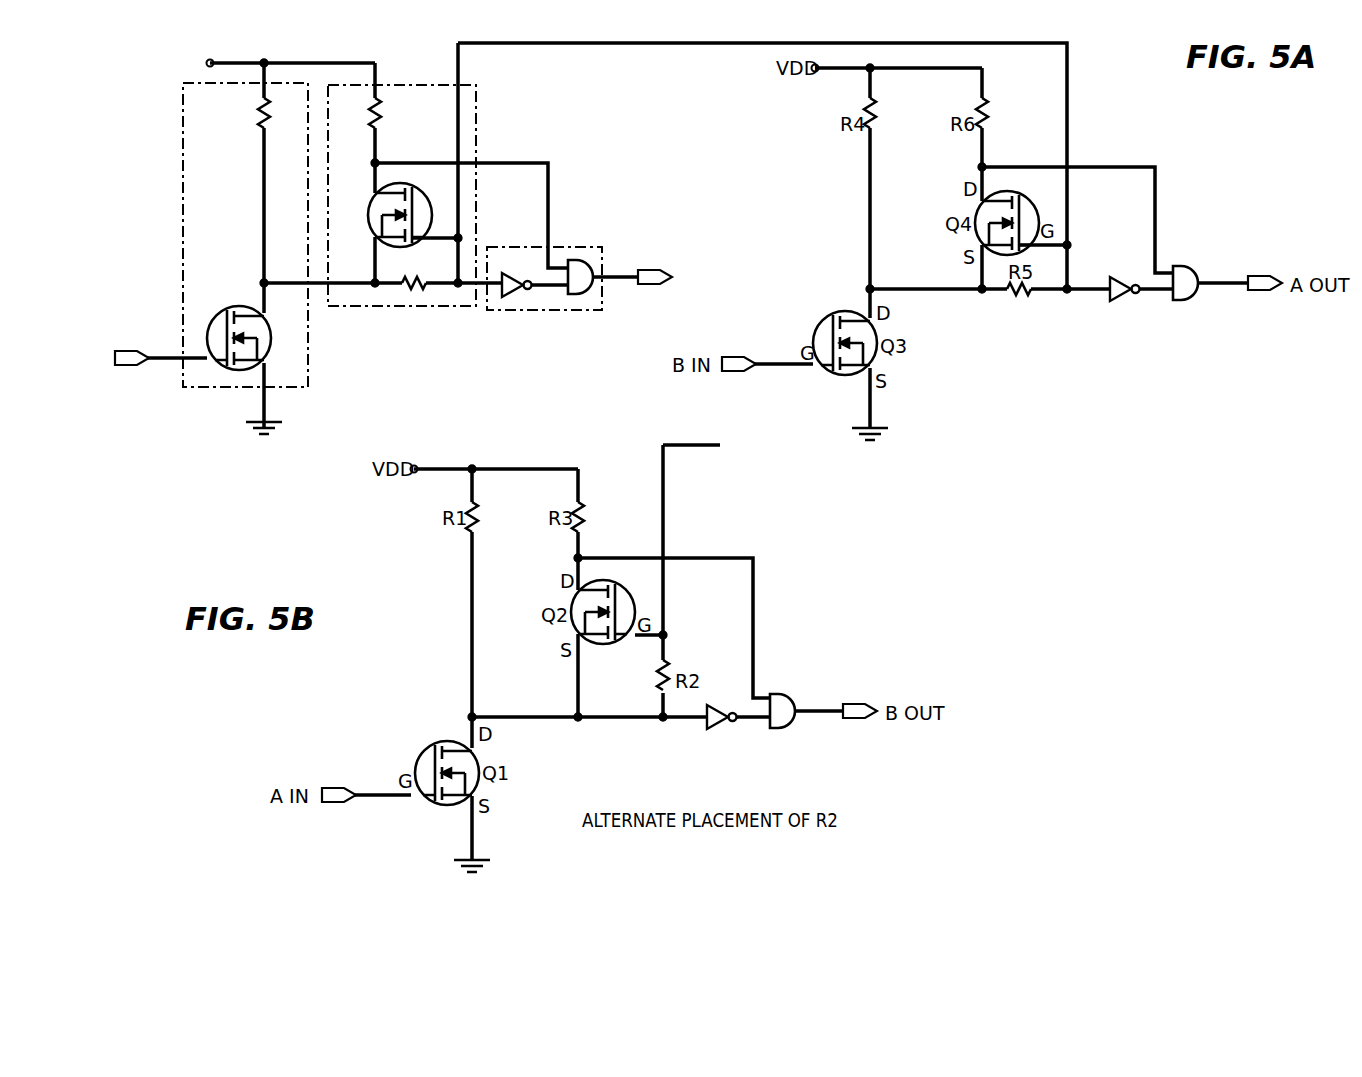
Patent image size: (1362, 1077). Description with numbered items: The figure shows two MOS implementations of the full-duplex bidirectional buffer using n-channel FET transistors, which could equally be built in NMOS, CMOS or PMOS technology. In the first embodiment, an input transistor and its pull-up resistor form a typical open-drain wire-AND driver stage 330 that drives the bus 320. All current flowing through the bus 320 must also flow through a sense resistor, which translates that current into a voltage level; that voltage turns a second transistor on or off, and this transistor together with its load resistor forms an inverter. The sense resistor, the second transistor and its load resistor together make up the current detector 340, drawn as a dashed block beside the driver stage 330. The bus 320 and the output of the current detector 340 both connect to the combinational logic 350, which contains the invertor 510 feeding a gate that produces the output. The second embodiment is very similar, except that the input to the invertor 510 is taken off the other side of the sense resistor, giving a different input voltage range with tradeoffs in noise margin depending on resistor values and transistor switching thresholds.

In FIG. 5A, the bus 320 is at (648, 45).
In FIG. 5A, the input transistor stage 330 is at (183, 222).
In FIG. 5A, the current detector 340 is at (476, 120).
In FIG. 5A, the combinational logic 350 is at (613, 272).
In FIG. 5A, the invertor 510 is at (516, 299).
In FIG. 5B, the invertor 510 is at (718, 727).